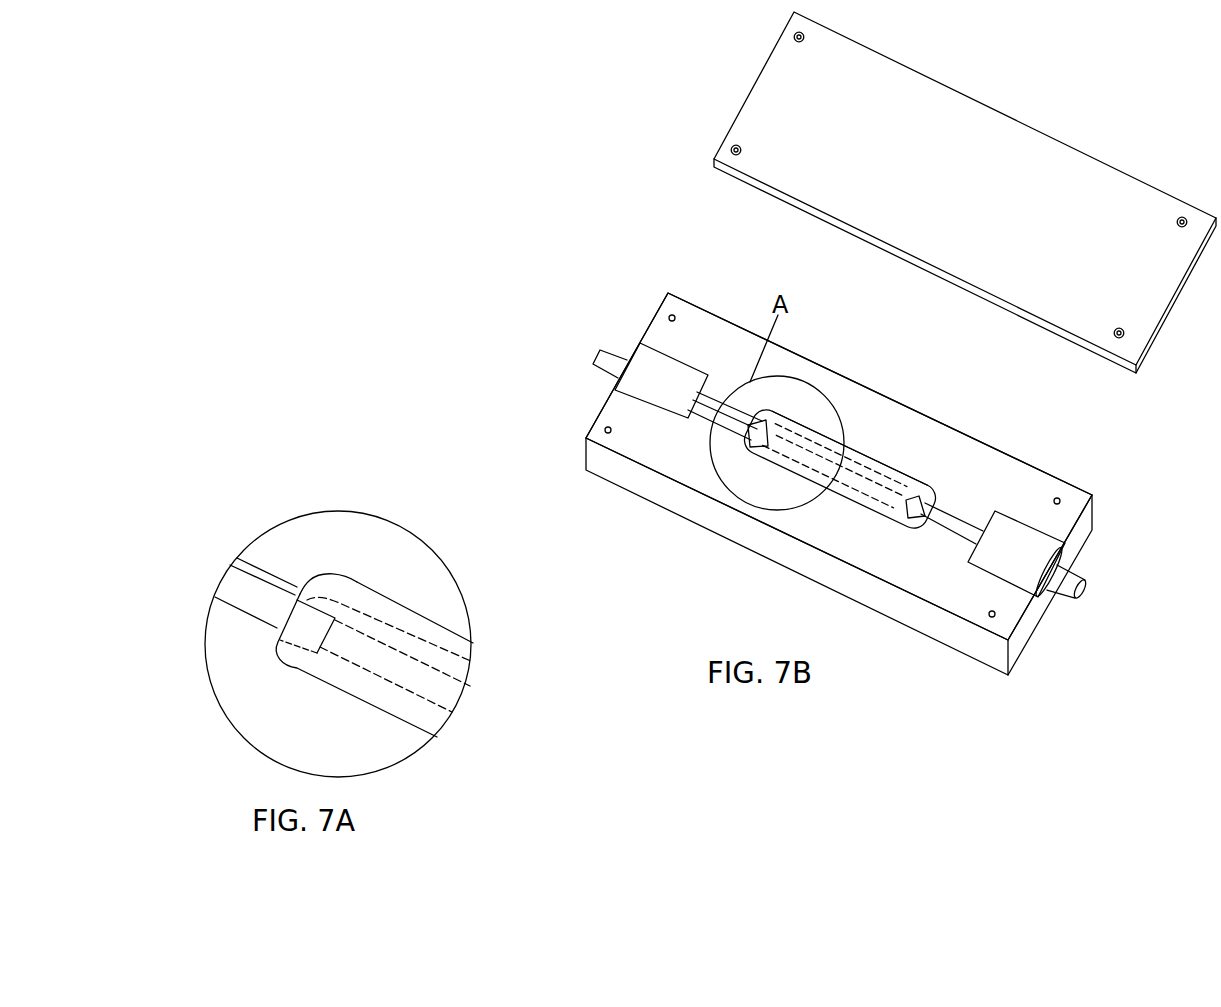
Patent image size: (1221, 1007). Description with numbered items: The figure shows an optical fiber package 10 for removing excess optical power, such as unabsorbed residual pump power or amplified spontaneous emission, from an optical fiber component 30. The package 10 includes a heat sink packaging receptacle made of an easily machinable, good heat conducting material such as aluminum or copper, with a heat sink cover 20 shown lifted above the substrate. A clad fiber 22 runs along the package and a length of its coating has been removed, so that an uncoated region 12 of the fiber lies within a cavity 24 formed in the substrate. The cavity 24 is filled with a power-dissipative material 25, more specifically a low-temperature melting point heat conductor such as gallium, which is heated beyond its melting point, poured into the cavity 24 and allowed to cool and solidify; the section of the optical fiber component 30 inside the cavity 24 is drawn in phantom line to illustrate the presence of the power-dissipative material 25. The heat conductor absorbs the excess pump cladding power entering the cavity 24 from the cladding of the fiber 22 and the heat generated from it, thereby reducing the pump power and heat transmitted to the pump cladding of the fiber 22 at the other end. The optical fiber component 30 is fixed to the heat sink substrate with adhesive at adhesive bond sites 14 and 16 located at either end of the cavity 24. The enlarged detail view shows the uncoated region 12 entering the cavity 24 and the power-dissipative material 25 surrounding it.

In FIG. 7B, the optical fiber package 10 is at (548, 275).
In FIG. 7B, the uncoated region 12 is at (855, 480).
In FIG. 7A, the uncoated region 12 is at (370, 663).
In FIG. 7B, the adhesive bond site 14 is at (650, 377).
In FIG. 7B, the adhesive bond site 16 is at (1015, 547).
In FIG. 7B, the heat sink cover 20 is at (747, 115).
In FIG. 7B, the clad fiber 22 is at (713, 405).
In FIG. 7A, the clad fiber 22 is at (268, 597).
In FIG. 7B, the cavity 24 is at (787, 433).
In FIG. 7A, the cavity 24 is at (350, 597).
In FIG. 7B, the power-dissipative material 25 is at (905, 478).
In FIG. 7A, the power-dissipative material 25 is at (390, 610).
In FIG. 7B, the optical fiber component 30 is at (910, 490).